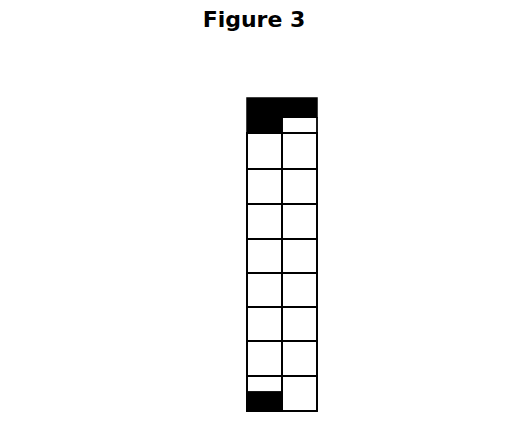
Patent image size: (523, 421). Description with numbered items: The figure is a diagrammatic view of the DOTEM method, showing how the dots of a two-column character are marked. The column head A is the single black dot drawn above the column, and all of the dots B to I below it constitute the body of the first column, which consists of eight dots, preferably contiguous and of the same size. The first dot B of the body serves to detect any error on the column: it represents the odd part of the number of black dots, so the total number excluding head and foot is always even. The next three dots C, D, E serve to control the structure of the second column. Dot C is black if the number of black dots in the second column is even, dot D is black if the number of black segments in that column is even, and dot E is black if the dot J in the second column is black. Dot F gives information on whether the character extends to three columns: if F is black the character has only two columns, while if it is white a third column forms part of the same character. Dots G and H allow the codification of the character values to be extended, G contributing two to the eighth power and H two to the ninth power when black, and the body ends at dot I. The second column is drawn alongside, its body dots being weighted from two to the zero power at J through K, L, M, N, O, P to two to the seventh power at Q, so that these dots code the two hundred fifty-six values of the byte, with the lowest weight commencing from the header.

The column head A is at (221, 102).
The first dot of the body B is at (234, 153).
The dot 2 (bit 2) C is at (234, 192).
The dot 3 (bit 3) D is at (234, 222).
The dot 4 (bit 4) E is at (234, 262).
The dot 5 (extension indicator) F is at (234, 290).
The dot 6 (2^8 extension dot) G is at (234, 330).
The dot 7 (2^9 extension dot) H is at (234, 358).
The last dot of the column body I is at (234, 400).
The dot weighted 2^0 J is at (330, 153).
The dot weighted 2^1 K is at (330, 192).
The dot weighted 2^2 L is at (330, 222).
The dot weighted 2^3 M is at (330, 262).
The dot weighted 2^4 N is at (330, 290).
The dot weighted 2^5 O is at (330, 330).
The dot weighted 2^6 P is at (330, 358).
The dot weighted 2^7 Q is at (330, 400).